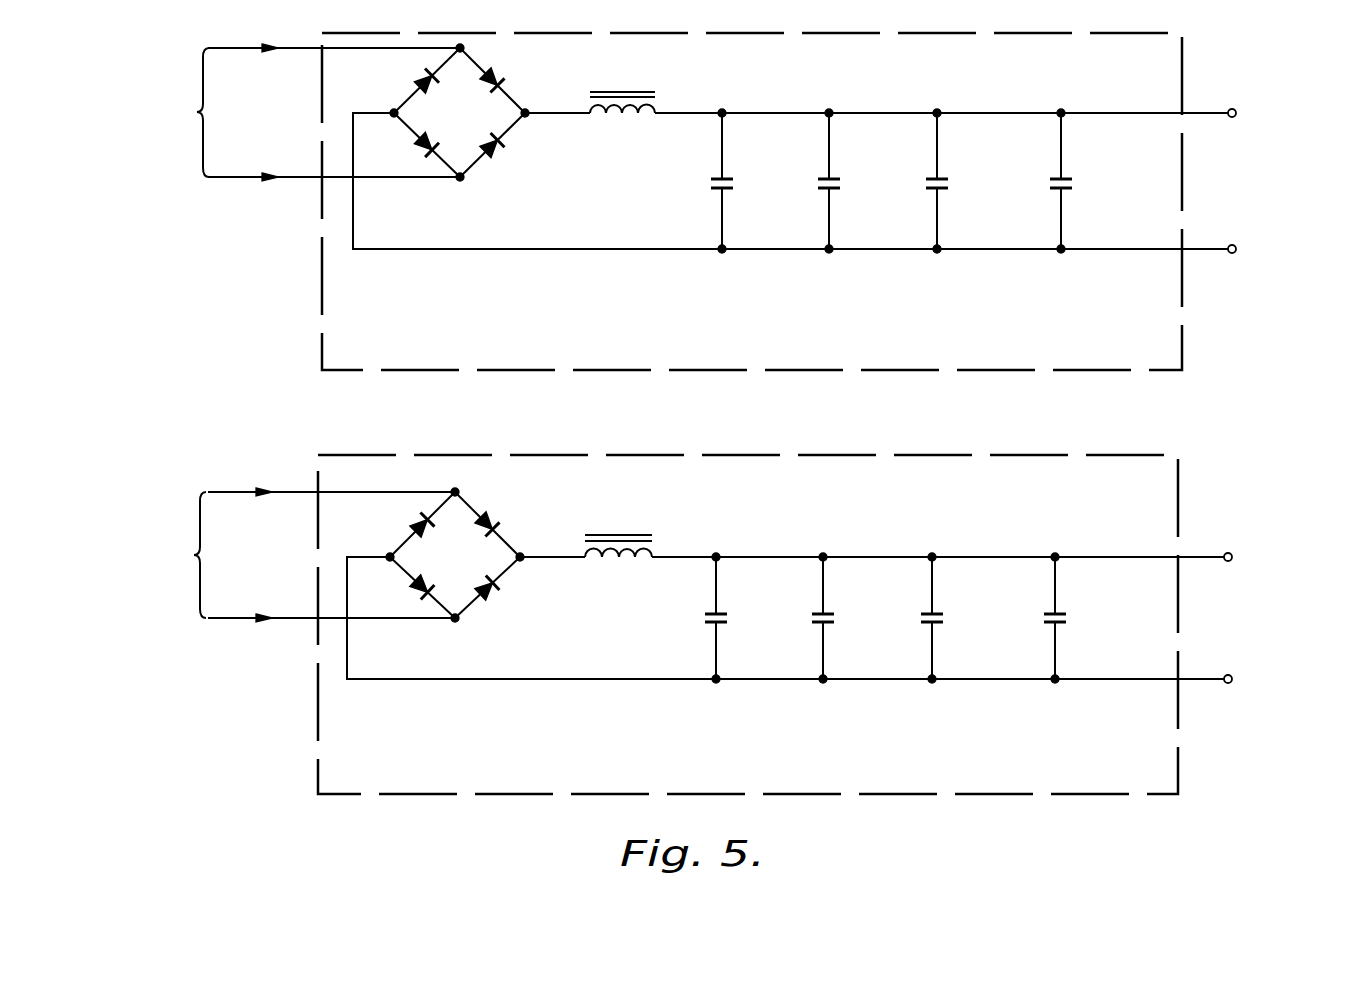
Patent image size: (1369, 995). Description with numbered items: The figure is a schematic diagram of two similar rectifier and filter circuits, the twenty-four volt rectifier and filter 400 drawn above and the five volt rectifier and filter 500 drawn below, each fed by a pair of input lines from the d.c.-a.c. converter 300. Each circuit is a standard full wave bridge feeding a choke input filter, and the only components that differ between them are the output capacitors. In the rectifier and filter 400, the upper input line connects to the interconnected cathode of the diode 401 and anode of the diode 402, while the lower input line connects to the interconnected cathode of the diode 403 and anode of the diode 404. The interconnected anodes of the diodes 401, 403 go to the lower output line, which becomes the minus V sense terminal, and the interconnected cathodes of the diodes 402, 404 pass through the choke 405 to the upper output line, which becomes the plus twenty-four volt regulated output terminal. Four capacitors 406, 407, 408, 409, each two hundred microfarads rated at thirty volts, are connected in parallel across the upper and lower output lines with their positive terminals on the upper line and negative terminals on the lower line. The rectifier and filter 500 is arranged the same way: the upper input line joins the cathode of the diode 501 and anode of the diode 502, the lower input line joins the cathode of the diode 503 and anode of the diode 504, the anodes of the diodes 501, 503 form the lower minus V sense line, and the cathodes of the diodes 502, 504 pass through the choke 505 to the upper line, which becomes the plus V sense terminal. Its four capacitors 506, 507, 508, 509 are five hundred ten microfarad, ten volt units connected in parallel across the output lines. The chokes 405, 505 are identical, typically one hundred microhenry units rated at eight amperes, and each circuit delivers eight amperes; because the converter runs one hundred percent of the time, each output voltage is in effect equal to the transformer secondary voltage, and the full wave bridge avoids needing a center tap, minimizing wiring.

The d.c.-a.c. converter 300 is at (104, 594).
The rectifier and filter 400 is at (853, 356).
The diode 401 is at (407, 75).
The diode 402 is at (510, 75).
The diode 403 is at (408, 149).
The diode 404 is at (512, 149).
The choke 405 is at (622, 115).
The capacitor 406 is at (739, 181).
The capacitor 407 is at (846, 181).
The capacitor 408 is at (954, 181).
The capacitor 409 is at (1077, 181).
The rectifier and filter 500 is at (955, 777).
The diode 501 is at (403, 522).
The diode 502 is at (509, 522).
The diode 503 is at (402, 592).
The diode 504 is at (507, 592).
The choke 505 is at (618, 559).
The capacitor 506 is at (732, 618).
The capacitor 507 is at (839, 618).
The capacitor 508 is at (948, 618).
The capacitor 509 is at (1071, 618).